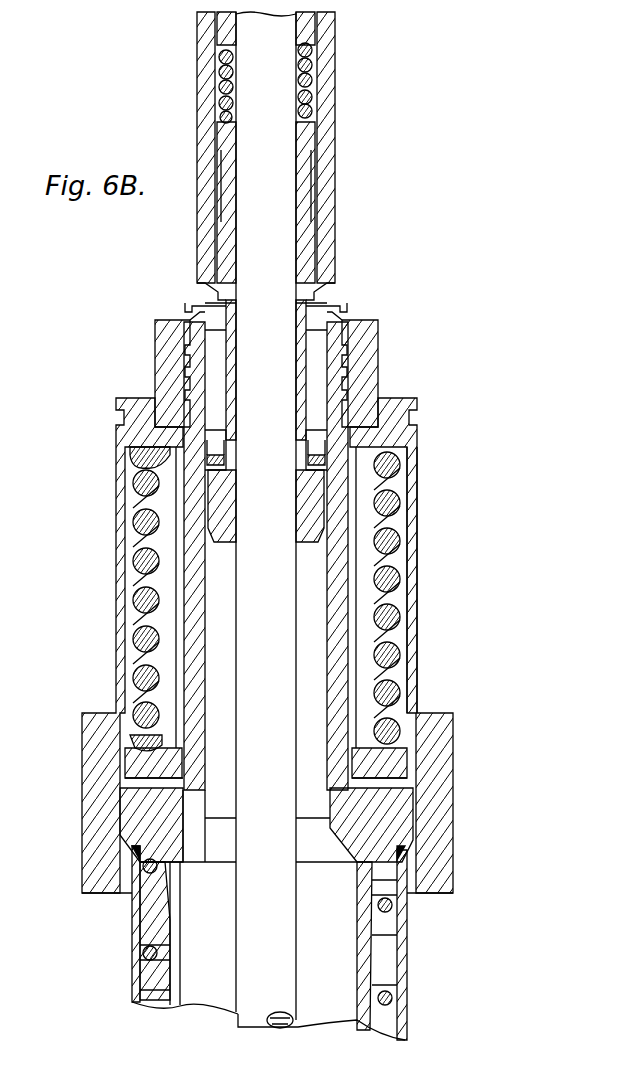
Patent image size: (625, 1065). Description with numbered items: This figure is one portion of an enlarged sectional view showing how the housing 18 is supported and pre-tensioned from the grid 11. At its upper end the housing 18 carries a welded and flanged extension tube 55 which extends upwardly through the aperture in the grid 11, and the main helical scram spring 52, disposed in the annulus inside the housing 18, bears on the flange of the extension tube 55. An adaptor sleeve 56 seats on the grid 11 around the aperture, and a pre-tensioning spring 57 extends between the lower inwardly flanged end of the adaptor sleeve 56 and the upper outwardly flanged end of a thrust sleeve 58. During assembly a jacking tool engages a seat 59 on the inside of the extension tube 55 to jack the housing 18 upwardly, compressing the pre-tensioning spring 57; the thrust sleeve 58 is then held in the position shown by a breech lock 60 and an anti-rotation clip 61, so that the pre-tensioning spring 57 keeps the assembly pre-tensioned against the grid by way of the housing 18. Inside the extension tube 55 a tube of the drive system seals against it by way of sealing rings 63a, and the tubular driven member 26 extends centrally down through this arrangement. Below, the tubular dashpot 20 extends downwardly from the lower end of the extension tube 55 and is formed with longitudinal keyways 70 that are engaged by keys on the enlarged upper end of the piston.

The tubular driven member 26 is at (265, 166).
The anti-rotation clip 61 is at (185, 303).
The breech lock 60 is at (366, 356).
The adaptor sleeve 56 is at (415, 463).
The sealing rings 63a is at (322, 476).
The extension tube 55 is at (340, 541).
The thrust sleeve 58 is at (135, 590).
The pre-tensioning spring 57 is at (135, 640).
The grid 11 is at (100, 713).
The seat 59 is at (130, 845).
The main helical scram spring 52 is at (130, 945).
The longitudinal keyways 70 is at (155, 990).
The housing 18 is at (407, 942).
The tubular dashpot 20 is at (372, 986).